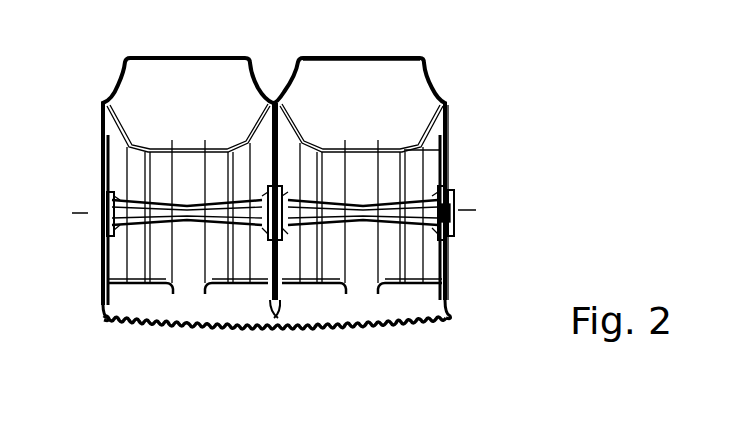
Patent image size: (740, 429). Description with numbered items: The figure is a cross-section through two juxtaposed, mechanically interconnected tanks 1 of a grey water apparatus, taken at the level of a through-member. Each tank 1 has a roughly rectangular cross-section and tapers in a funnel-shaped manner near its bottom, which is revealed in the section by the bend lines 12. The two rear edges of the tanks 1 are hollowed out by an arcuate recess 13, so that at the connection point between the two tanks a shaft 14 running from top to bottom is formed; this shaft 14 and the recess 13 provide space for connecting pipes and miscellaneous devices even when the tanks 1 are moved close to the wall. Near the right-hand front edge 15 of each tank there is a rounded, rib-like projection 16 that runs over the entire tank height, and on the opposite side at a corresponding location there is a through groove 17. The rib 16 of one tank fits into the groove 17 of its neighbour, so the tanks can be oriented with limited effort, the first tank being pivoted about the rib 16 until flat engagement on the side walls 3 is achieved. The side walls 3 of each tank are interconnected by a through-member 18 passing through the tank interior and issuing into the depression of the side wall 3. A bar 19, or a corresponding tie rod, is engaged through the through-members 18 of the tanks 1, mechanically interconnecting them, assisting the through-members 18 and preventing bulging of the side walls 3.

The tank 1 is at (410, 125).
The side wall 3 is at (447, 116).
The bend line 12 is at (412, 160).
The arcuate recess 13 is at (430, 100).
The shaft 14 is at (277, 90).
The right-hand front edge 15 is at (451, 341).
The rib-like projection 16 is at (448, 310).
The through groove 17 is at (105, 315).
The through-member 18 is at (440, 183).
The bar 19 is at (440, 186).